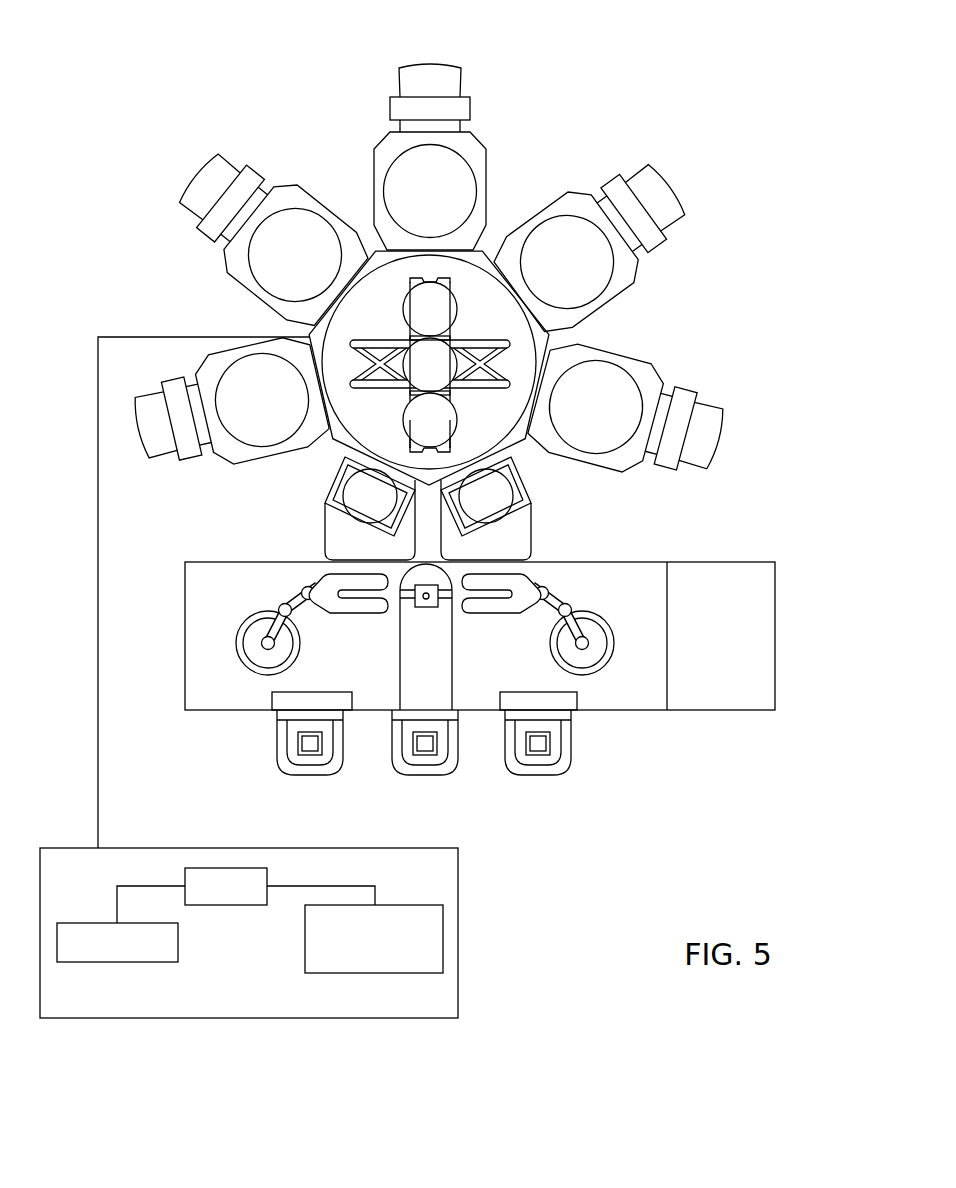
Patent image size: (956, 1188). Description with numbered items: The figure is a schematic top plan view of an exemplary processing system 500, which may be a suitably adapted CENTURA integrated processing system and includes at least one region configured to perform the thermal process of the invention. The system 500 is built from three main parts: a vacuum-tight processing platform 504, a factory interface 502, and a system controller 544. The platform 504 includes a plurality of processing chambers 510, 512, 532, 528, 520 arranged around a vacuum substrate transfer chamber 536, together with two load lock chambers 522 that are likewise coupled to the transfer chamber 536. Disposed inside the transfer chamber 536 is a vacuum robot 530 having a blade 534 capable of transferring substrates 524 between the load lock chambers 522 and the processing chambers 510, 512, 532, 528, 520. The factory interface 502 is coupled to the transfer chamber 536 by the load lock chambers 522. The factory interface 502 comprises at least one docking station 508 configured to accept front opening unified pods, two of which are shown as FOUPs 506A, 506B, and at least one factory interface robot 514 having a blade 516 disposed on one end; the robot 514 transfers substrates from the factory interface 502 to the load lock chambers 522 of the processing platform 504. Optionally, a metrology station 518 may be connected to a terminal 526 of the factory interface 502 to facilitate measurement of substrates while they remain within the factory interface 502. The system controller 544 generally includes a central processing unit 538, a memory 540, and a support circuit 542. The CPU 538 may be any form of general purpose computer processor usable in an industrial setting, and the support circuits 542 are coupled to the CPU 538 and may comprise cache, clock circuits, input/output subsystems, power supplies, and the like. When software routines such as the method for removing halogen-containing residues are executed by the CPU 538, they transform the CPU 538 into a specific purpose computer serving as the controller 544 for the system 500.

The processing system 500 is at (315, 100).
The factory interface 502 is at (803, 616).
The vacuum-tight processing platform 504 is at (725, 44).
The front opening unified pod (FOUP) 506A is at (538, 777).
The front opening unified pod (FOUP) 506B is at (277, 748).
The docking station 508 is at (686, 562).
The processing chamber 510 is at (243, 410).
The processing chamber 512 is at (276, 267).
The factory interface robot 514 is at (262, 612).
The blade 516 is at (360, 616).
The metrology station 518 is at (703, 627).
The processing chamber 520 is at (577, 417).
The load lock chamber 522 is at (350, 537).
The substrate 524 is at (410, 283).
The terminal 526 is at (667, 687).
The processing chamber 528 is at (546, 274).
The vacuum robot 530 is at (462, 343).
The processing chamber 532 is at (411, 201).
The blade 534 is at (408, 409).
The vacuum substrate transfer chamber 536 is at (468, 429).
The central processing unit (CPU) 538 is at (267, 877).
The memory 540 is at (100, 923).
The support circuit 542 is at (386, 905).
The system controller 544 is at (265, 1018).